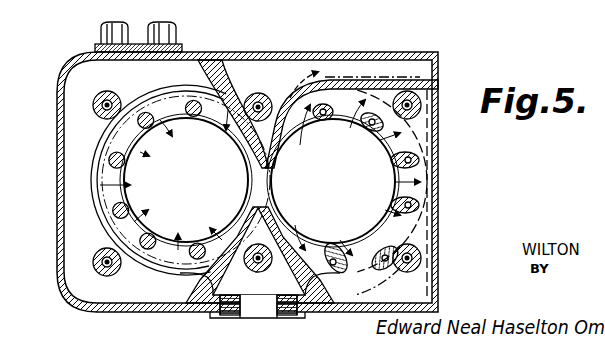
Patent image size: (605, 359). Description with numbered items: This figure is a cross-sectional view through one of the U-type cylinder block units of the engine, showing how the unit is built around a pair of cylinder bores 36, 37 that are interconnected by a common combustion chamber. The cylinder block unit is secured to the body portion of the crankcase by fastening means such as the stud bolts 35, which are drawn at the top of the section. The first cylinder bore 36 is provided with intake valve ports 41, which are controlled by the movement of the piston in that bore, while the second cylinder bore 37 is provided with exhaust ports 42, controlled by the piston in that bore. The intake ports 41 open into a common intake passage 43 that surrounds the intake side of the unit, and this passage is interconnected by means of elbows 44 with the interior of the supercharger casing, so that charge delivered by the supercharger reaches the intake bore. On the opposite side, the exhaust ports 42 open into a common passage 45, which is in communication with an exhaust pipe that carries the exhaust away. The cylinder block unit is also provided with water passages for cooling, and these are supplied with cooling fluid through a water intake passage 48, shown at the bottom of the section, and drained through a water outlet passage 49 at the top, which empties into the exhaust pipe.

The stud bolts 35 is at (256, 93).
The cylinder bore 36 is at (236, 213).
The cylinder bore 37 is at (280, 160).
The intake valve ports 41 is at (120, 197).
The exhaust ports 42 is at (405, 187).
The common intake passage 43 is at (78, 99).
The elbows 44 is at (103, 33).
The common passage 45 is at (418, 285).
The water intake passage 48 is at (258, 282).
The water outlet passage 49 is at (357, 72).